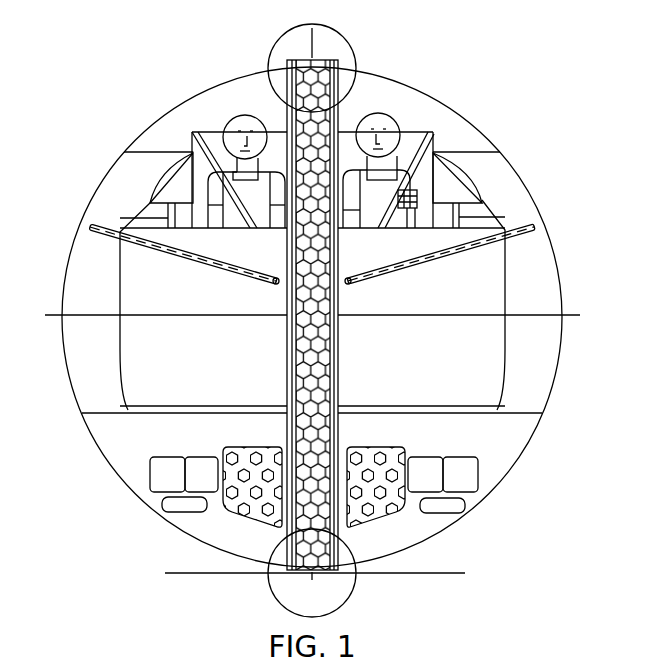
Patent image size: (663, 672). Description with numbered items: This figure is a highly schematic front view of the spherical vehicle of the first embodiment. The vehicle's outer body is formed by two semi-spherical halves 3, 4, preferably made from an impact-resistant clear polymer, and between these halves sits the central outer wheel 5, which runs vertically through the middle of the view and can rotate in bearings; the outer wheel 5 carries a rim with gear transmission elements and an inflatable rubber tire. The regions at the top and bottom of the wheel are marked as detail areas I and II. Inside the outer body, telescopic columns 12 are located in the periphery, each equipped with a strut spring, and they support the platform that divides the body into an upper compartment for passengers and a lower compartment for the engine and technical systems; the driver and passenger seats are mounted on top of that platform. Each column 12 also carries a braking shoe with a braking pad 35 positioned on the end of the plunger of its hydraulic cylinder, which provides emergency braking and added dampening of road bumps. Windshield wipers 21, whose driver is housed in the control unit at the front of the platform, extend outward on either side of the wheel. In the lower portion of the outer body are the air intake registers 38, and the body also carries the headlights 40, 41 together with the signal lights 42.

The upper detail region I is at (344, 42).
The lower detail region II is at (283, 604).
The semi-spherical half 3 is at (390, 97).
The semi-spherical half 4 is at (242, 97).
The central outer wheel 5 is at (312, 363).
The telescopic column 12 is at (170, 217).
The windshield wiper 21 is at (207, 268).
The braking pad 35 is at (182, 168).
The air intake register 38 is at (272, 513).
The headlight 40 is at (170, 480).
The headlight 41 is at (205, 468).
The signal light 42 is at (185, 507).